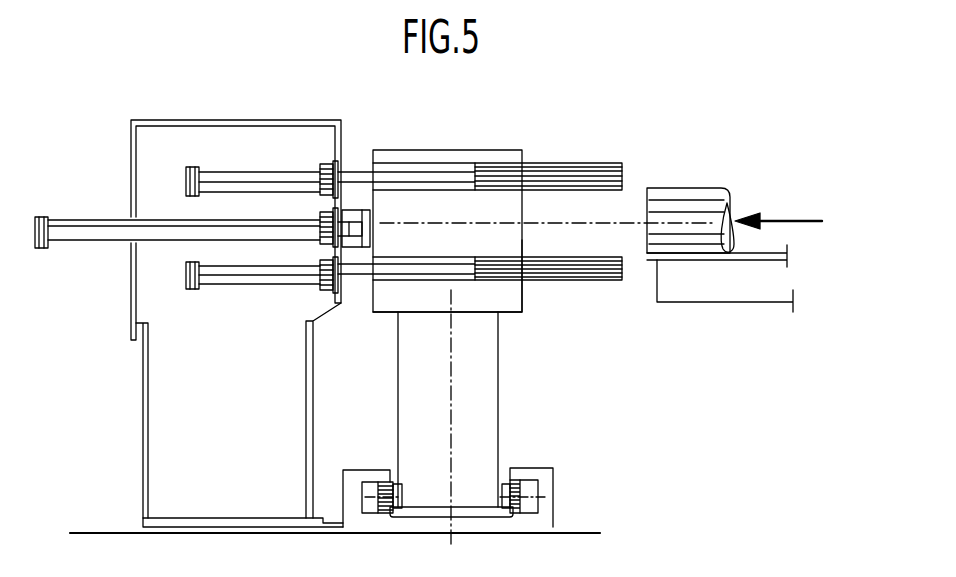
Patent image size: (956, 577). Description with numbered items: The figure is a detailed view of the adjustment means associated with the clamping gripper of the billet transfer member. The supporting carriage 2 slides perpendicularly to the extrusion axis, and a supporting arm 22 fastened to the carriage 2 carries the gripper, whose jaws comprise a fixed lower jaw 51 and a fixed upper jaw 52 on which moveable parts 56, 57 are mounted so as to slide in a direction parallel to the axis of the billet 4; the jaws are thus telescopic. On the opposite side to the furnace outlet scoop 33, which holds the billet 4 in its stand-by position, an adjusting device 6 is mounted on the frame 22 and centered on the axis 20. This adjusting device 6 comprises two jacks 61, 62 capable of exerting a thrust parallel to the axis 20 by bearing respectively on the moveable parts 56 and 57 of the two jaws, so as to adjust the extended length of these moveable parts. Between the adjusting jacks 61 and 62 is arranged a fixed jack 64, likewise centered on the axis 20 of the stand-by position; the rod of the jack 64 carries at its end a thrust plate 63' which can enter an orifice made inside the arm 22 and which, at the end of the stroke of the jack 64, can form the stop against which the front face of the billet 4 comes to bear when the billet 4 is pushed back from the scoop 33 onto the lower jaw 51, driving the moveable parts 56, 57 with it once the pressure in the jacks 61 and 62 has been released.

The supporting carriage 2 is at (473, 389).
The billet 4 is at (698, 198).
The adjusting device 6 is at (345, 145).
The axis 20 is at (35, 232).
The supporting arm 22 is at (543, 485).
The furnace outlet scoop 33 is at (710, 280).
The lower jaw 51 is at (505, 298).
The upper jaw 52 is at (447, 160).
The moveable part 56 is at (600, 264).
The moveable part 57 is at (562, 170).
The jack 61 is at (228, 274).
The jack 62 is at (255, 178).
The thrust plate 63' is at (390, 168).
The jack 64 is at (93, 237).